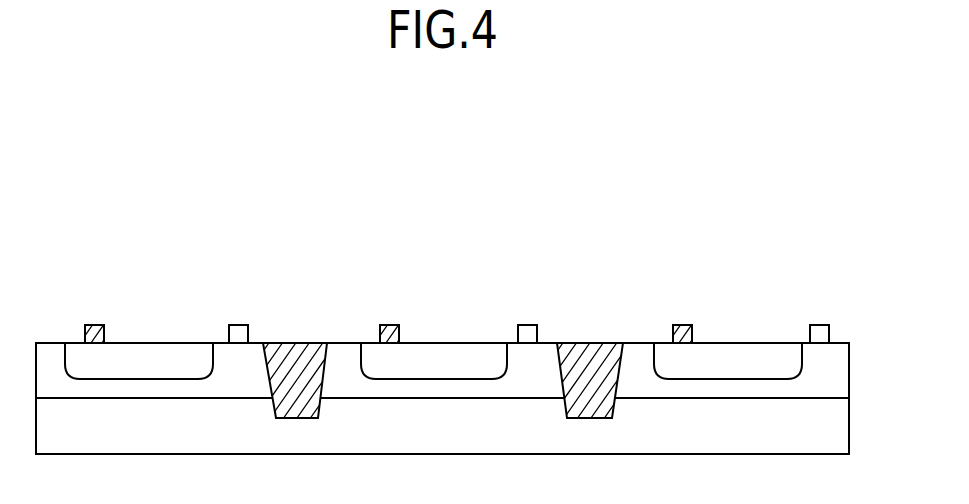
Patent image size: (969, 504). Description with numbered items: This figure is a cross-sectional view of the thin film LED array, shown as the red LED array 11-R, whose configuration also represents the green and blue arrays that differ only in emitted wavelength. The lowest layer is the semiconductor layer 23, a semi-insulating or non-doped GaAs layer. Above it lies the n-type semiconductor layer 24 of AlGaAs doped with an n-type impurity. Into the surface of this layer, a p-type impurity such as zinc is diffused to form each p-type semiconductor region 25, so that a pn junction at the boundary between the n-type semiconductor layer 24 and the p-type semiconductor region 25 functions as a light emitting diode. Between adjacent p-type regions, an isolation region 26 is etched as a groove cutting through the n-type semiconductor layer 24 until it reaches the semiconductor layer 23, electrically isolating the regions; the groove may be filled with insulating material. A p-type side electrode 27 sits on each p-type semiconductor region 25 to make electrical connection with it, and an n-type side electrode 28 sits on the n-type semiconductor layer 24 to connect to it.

The red LED array 11-R is at (485, 197).
The semiconductor layer 23 is at (849, 418).
The n-type semiconductor layer 24 is at (849, 363).
The p-type semiconductor region 25 is at (147, 343).
The isolation region 26 is at (593, 343).
The p-type side electrode 27 is at (98, 323).
The n-type side electrode 28 is at (238, 323).